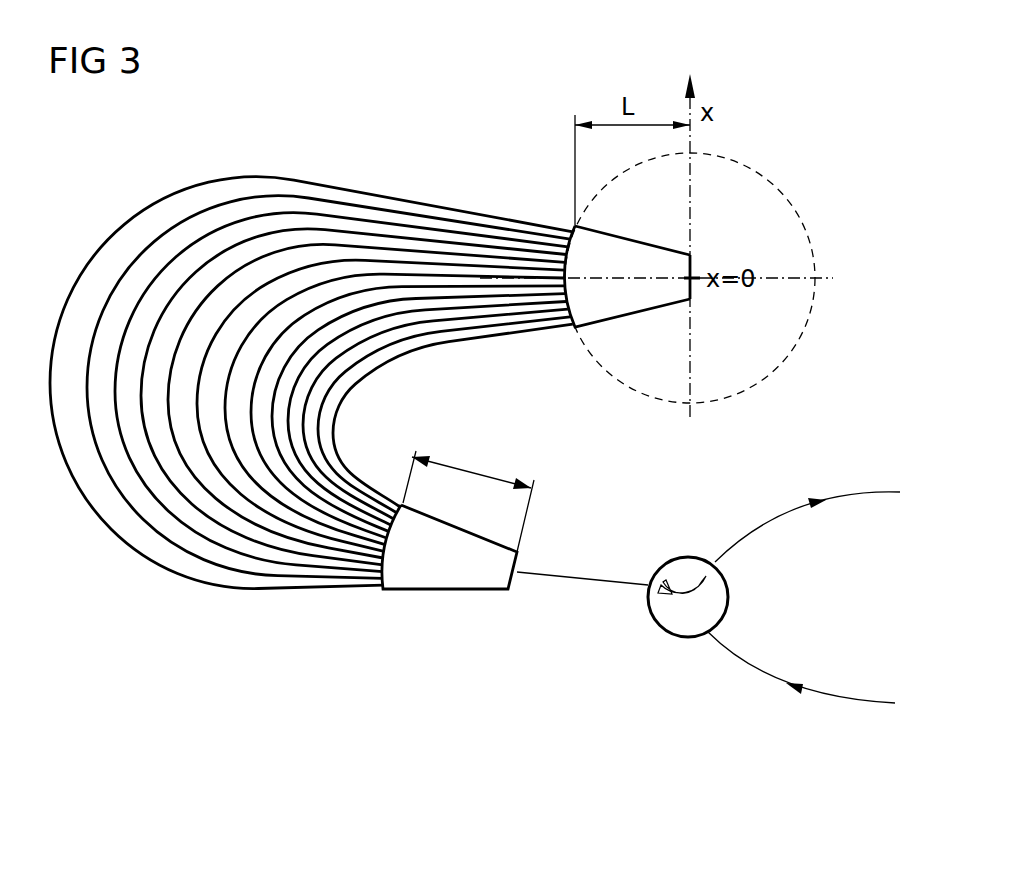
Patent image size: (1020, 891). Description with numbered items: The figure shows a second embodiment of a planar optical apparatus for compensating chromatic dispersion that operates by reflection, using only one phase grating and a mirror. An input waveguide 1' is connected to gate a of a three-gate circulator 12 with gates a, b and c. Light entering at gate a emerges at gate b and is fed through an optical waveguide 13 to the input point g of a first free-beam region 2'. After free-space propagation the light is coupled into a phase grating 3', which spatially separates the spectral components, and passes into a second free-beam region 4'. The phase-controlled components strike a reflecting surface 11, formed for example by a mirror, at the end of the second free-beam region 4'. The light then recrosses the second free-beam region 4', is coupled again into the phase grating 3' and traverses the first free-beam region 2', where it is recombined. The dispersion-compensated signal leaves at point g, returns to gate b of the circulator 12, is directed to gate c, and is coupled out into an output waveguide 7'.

The phase grating 3' is at (311, 378).
The second free-beam region 4' is at (627, 296).
The first free-beam region 2' is at (458, 547).
The reflecting surface 11 is at (692, 262).
The optical waveguide 13 is at (600, 585).
The 3-gate circulator 12 is at (670, 633).
The output waveguide 7' is at (807, 496).
The input waveguide 1' is at (801, 700).